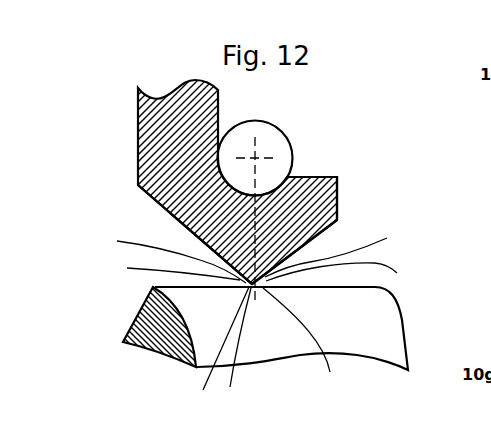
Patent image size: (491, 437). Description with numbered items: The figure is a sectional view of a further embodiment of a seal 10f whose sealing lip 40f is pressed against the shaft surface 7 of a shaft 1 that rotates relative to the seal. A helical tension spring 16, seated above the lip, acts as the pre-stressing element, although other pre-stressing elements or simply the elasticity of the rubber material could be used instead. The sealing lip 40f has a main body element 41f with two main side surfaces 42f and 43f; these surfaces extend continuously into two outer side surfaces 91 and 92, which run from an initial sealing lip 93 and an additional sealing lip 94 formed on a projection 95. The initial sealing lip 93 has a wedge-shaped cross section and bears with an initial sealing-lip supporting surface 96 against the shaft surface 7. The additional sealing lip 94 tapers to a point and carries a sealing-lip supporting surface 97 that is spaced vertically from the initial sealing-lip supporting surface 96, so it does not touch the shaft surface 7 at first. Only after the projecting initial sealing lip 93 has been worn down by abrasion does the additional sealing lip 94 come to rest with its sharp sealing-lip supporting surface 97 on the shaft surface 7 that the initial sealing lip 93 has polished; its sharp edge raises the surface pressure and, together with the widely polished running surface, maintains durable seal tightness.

The seal 10f is at (136, 131).
The sealing lip 40f is at (161, 217).
The main body element 41f is at (337, 197).
The main side surface 42f is at (206, 245).
The main side surface 43f is at (265, 273).
The helical tension spring 16 is at (291, 149).
The shaft surface 7 is at (190, 287).
The shaft 1 is at (213, 320).
The outer side surface 91 is at (171, 271).
The outer side surface 92 is at (340, 279).
The initial sealing lip 93 is at (219, 352).
The additional sealing lip 94 is at (338, 252).
The projection 95 is at (169, 257).
The initial sealing-lip supporting surface 96 is at (240, 349).
The sealing-lip supporting surface 97 is at (303, 342).